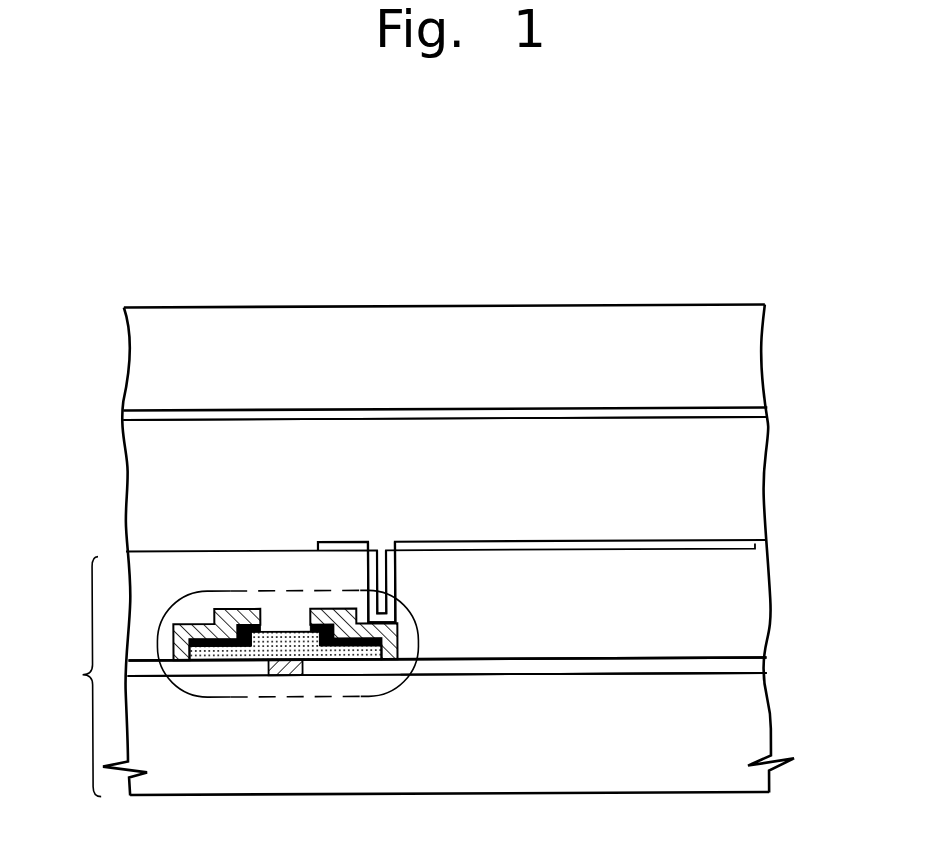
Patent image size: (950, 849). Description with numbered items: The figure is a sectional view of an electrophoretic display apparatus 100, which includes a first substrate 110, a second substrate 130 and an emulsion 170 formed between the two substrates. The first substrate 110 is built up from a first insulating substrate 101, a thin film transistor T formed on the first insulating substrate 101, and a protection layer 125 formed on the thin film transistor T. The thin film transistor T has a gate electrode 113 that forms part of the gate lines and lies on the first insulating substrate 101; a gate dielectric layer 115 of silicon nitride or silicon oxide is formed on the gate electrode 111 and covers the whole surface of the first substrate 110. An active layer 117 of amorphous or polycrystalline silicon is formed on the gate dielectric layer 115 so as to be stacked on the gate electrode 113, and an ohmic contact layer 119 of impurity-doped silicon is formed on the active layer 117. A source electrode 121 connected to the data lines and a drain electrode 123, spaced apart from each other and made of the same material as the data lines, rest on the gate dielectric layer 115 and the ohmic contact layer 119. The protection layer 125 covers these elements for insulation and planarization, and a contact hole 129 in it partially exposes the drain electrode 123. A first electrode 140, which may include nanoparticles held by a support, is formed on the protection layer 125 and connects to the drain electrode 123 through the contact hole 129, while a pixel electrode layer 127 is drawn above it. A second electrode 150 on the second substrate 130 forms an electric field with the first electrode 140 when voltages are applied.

The electrophoretic display apparatus 100 is at (704, 292).
The second substrate 130 is at (748, 358).
The second electrode 150 is at (748, 412).
The emulsion 170 is at (748, 473).
The first electrode 140 is at (748, 547).
The pixel electrode 127 is at (478, 543).
The contact hole 129 is at (381, 556).
The protection layer 125 is at (748, 600).
The gate dielectric layer 115 is at (748, 668).
The first insulating substrate 101 is at (748, 722).
The first substrate 110 is at (65, 677).
The gate electrode 111 is at (637, 668).
The gate electrode 113 is at (283, 678).
The active layer 117 is at (220, 656).
The ohmic contact layer 119 is at (240, 624).
The source electrode 121 is at (183, 622).
The drain electrode 123 is at (325, 608).
The thin film transistor T is at (362, 698).